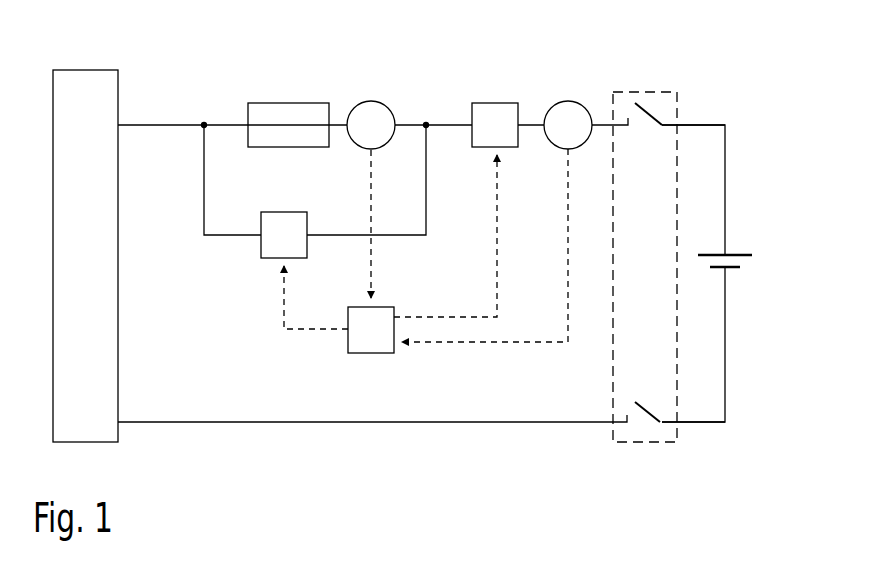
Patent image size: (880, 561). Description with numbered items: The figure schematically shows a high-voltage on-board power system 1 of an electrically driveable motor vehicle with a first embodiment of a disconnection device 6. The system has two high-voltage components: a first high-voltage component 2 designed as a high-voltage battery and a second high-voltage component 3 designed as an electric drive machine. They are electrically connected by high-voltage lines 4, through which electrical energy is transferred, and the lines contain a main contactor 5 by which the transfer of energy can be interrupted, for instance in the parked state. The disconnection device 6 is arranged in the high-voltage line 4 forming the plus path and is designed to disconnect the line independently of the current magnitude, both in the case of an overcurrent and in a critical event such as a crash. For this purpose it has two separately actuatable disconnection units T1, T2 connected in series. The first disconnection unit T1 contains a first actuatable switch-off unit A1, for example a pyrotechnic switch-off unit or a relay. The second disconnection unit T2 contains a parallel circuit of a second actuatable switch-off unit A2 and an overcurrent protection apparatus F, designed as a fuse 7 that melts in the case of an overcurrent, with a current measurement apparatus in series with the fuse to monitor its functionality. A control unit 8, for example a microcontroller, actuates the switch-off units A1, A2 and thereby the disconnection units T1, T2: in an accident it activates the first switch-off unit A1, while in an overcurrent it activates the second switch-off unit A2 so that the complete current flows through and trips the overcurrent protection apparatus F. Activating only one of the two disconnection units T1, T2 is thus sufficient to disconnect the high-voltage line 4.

The high-voltage on-board power system 1 is at (736, 90).
The first high-voltage component 2 is at (743, 252).
The second high-voltage component 3 is at (86, 70).
The high-voltage line 4 is at (697, 123).
The main contactor 5 is at (641, 92).
The disconnection device 6 is at (392, 110).
The fuse 7 is at (288, 103).
The control unit 8 is at (371, 353).
The overcurrent protection apparatus F is at (258, 96).
The first disconnection unit T1 is at (476, 100).
The second disconnection unit T2 is at (238, 168).
The first switch-off unit A1 is at (495, 103).
The second switch-off unit A2 is at (283, 212).